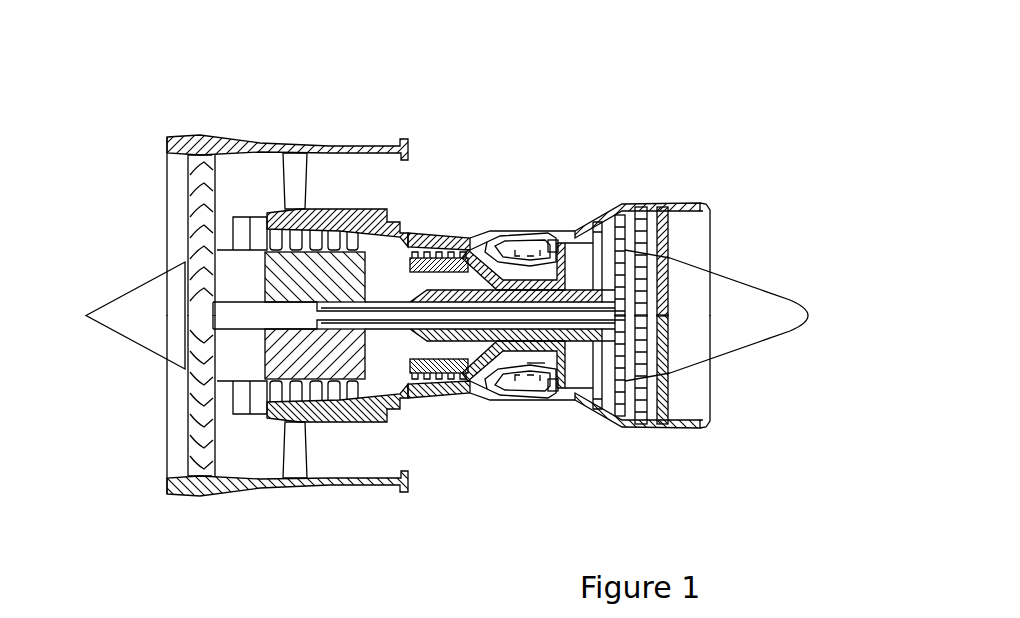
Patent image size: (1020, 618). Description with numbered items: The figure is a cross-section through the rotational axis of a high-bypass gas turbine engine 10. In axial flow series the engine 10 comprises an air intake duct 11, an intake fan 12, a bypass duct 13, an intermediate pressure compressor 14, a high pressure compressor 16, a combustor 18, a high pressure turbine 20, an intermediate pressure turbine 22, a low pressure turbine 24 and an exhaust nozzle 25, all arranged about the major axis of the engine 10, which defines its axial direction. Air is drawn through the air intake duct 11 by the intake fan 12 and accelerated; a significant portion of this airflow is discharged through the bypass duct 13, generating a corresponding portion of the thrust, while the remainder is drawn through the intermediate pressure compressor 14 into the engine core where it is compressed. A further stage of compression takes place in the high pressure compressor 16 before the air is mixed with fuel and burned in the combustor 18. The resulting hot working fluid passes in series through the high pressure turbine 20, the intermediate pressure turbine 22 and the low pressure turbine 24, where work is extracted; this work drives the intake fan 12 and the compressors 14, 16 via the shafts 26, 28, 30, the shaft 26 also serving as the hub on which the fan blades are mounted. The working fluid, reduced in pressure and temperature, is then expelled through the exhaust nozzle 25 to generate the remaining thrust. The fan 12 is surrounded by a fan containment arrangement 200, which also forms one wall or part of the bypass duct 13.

The high-bypass gas turbine engine 10 is at (531, 86).
The air intake duct 11 is at (178, 170).
The intake fan 12 is at (203, 218).
The bypass duct 13 is at (385, 191).
The intermediate pressure compressor 14 is at (270, 232).
The high pressure compressor 16 is at (477, 232).
The combustor 18 is at (525, 247).
The high pressure turbine 20 is at (553, 232).
The intermediate pressure turbine 22 is at (598, 238).
The low pressure turbine 24 is at (662, 207).
The exhaust nozzle 25 is at (702, 253).
The shaft 26 is at (228, 313).
The shaft 28 is at (462, 332).
The shaft 30 is at (538, 362).
The fan containment arrangement 200 is at (212, 502).